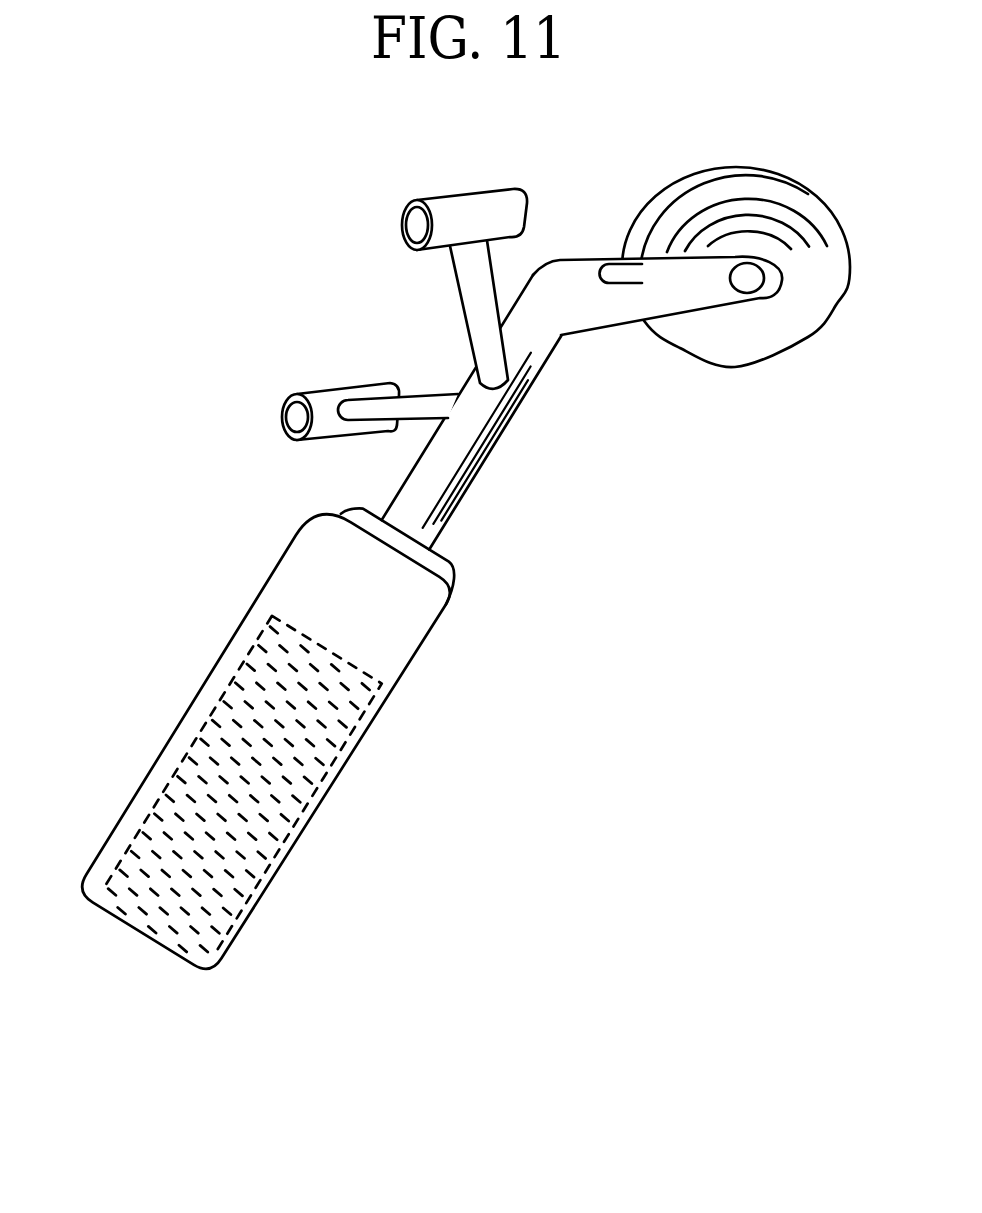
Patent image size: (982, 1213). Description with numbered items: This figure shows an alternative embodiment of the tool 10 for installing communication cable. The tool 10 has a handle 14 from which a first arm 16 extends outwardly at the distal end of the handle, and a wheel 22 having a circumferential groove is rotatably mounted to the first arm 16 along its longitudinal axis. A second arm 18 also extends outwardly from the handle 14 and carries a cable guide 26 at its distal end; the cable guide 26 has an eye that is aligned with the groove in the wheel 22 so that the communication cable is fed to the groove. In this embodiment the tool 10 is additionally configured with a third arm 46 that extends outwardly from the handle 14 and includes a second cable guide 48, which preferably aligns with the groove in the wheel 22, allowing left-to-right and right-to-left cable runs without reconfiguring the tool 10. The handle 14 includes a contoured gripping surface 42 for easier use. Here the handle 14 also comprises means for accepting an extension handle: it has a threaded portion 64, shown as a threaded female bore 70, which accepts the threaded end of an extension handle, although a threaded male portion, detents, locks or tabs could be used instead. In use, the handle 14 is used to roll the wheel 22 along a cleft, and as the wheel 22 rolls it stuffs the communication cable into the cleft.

The tool 10 is at (483, 344).
The handle 14 is at (407, 483).
The first arm 16 is at (580, 258).
The second arm 18 is at (461, 288).
The wheel 22 is at (737, 163).
The cable guide 26 is at (476, 193).
The contoured gripping surface 42 is at (280, 558).
The third arm 46 is at (433, 397).
The second cable guide 48 is at (327, 391).
The threaded portion 64 is at (347, 717).
The threaded female bore 70 is at (145, 945).